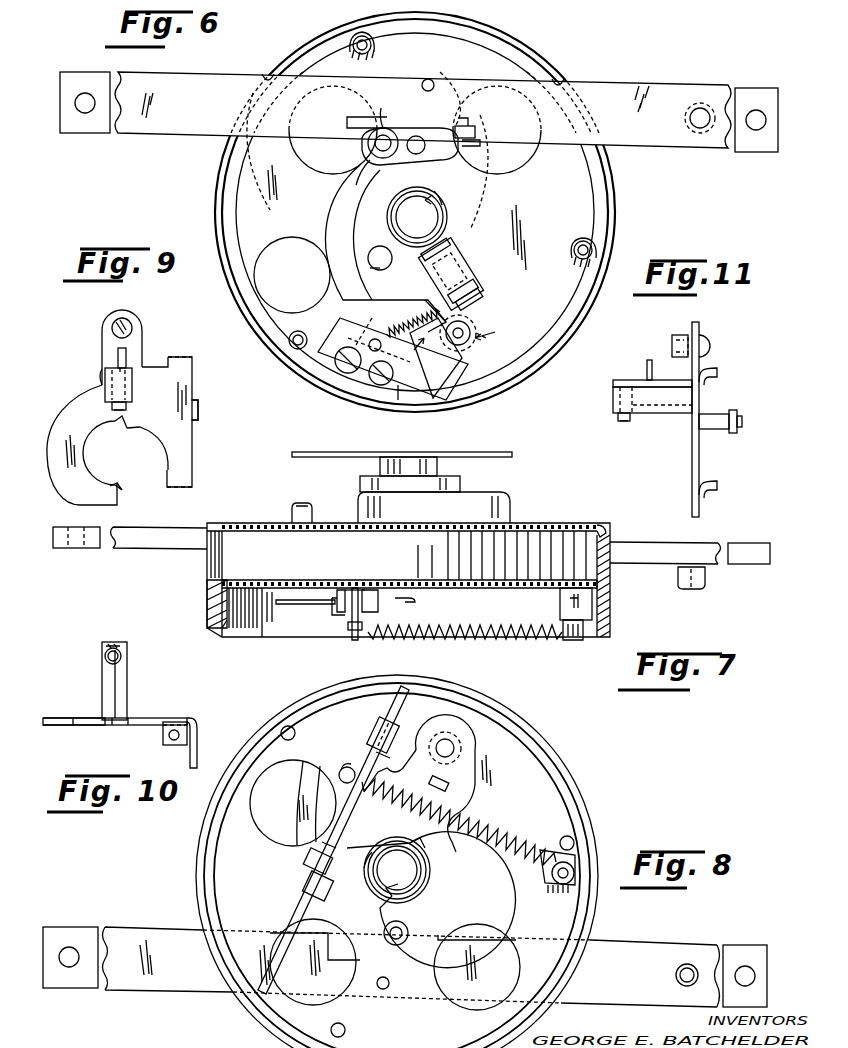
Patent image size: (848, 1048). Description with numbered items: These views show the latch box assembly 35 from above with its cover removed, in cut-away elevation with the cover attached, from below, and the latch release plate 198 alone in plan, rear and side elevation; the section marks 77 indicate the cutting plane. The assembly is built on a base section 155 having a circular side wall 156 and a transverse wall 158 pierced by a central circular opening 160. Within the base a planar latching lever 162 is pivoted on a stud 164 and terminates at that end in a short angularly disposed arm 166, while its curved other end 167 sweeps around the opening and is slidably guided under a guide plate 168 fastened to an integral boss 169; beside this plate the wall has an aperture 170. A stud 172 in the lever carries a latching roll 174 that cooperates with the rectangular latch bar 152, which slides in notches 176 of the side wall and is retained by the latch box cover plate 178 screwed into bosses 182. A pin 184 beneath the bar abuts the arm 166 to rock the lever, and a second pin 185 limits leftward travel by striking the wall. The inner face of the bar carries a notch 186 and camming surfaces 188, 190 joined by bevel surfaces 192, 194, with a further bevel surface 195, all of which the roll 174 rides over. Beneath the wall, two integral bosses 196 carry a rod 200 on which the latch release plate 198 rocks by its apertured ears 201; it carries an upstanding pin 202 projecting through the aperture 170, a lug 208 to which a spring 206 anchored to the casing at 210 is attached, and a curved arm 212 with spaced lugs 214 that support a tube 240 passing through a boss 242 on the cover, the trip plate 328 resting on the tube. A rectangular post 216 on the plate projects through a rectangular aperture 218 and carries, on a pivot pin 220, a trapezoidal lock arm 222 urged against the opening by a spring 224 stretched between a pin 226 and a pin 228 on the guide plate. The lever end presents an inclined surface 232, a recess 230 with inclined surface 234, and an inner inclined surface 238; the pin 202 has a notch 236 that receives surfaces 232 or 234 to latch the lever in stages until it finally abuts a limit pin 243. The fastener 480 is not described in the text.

In FIG. 6, the latch box assembly 35 is at (620, 196).
In FIG. 7, the latch box assembly 35 is at (265, 512).
In FIG. 8, the latch box assembly 35 is at (547, 732).
In FIG. 6, the section line 77 is at (456, 344).
In FIG. 6, the latch bar 152 is at (618, 82).
In FIG. 7, the latch bar 152 is at (620, 539).
In FIG. 8, the latch bar 152 is at (160, 931).
In FIG. 7, the base section 155 is at (206, 587).
In FIG. 6, the circular side wall 156 is at (238, 218).
In FIG. 7, the circular side wall 156 is at (232, 631).
In FIG. 6, the transverse wall 158 is at (510, 193).
In FIG. 7, the transverse wall 158 is at (250, 612).
In FIG. 8, the transverse wall 158 is at (566, 786).
In FIG. 6, the central circular opening 160 is at (442, 203).
In FIG. 8, the central circular opening 160 is at (364, 872).
In FIG. 6, the latching lever 162 is at (313, 211).
In FIG. 8, the latching lever 162 is at (290, 799).
In FIG. 6, the stud 164 is at (424, 146).
In FIG. 8, the stud 164 is at (396, 939).
In FIG. 6, the short angularly disposed arm 166 is at (456, 81).
In FIG. 6, the end of lever 167 is at (292, 275).
In FIG. 6, the guide plate 168 is at (398, 400).
In FIG. 6, the integral boss 169 is at (336, 380).
In FIG. 6, the aperture 170 is at (474, 328).
In FIG. 8, the aperture 170 is at (442, 739).
In FIG. 6, the stud 172 is at (378, 129).
In FIG. 6, the latching roll 174 is at (364, 153).
In FIG. 6, the notches 176 is at (265, 72).
In FIG. 7, the latch box cover plate 178 is at (600, 523).
In FIG. 6, the bosses 182 is at (372, 44).
In FIG. 8, the bosses 182 is at (427, 881).
In FIG. 6, the pin 184 is at (426, 79).
In FIG. 8, the pin 184 is at (383, 989).
In FIG. 6, the second pin 185 is at (702, 103).
In FIG. 7, the second pin 185 is at (706, 576).
In FIG. 8, the second pin 185 is at (688, 964).
In FIG. 6, the notch 186 is at (344, 128).
In FIG. 6, the camming surface 188 is at (392, 125).
In FIG. 6, the camming surface 190 is at (472, 130).
In FIG. 6, the bevel surface 192 is at (384, 104).
In FIG. 6, the bevel surface 194 is at (472, 112).
In FIG. 6, the bevel surface 195 is at (478, 144).
In FIG. 7, the integral bosses 196 is at (328, 612).
In FIG. 8, the integral bosses 196 is at (380, 721).
In FIG. 9, the latch release plate 198 is at (190, 384).
In FIG. 11, the latch release plate 198 is at (692, 456).
In FIG. 7, the latch release plate 198 is at (478, 604).
In FIG. 10, the latch release plate 198 is at (140, 717).
In FIG. 8, the latch release plate 198 is at (462, 875).
In FIG. 7, the rod 200 is at (286, 617).
In FIG. 8, the rod 200 is at (302, 900).
In FIG. 9, the apertured ears 201 is at (185, 355).
In FIG. 11, the apertured ears 201 is at (712, 367).
In FIG. 7, the apertured ears 201 is at (348, 622).
In FIG. 10, the apertured ears 201 is at (162, 740).
In FIG. 8, the apertured ears 201 is at (372, 732).
In FIG. 6, the upstanding pin 202 is at (491, 344).
In FIG. 9, the upstanding pin 202 is at (124, 319).
In FIG. 11, the upstanding pin 202 is at (692, 334).
In FIG. 8, the upstanding pin 202 is at (448, 739).
In FIG. 7, the spring 206 is at (480, 640).
In FIG. 8, the spring 206 is at (480, 826).
In FIG. 9, the lug 208 is at (199, 407).
In FIG. 11, the lug 208 is at (742, 414).
In FIG. 7, the lug 208 is at (354, 642).
In FIG. 10, the lug 208 is at (198, 734).
In FIG. 8, the lug 208 is at (344, 768).
In FIG. 7, the anchor 210 is at (568, 640).
In FIG. 8, the anchor 210 is at (560, 862).
In FIG. 9, the curved arm 212 is at (68, 470).
In FIG. 10, the curved arm 212 is at (56, 717).
In FIG. 8, the curved arm 212 is at (454, 888).
In FIG. 6, the spaced lugs 214 is at (422, 217).
In FIG. 9, the spaced lugs 214 is at (112, 470).
In FIG. 8, the spaced lugs 214 is at (390, 888).
In FIG. 6, the rectangular post 216 is at (450, 244).
In FIG. 9, the rectangular post 216 is at (102, 382).
In FIG. 11, the rectangular post 216 is at (646, 417).
In FIG. 10, the rectangular post 216 is at (102, 652).
In FIG. 6, the rectangular aperture 218 is at (392, 255).
In FIG. 6, the pivot pin 220 is at (438, 249).
In FIG. 9, the pivot pin 220 is at (110, 406).
In FIG. 11, the pivot pin 220 is at (624, 421).
In FIG. 10, the pivot pin 220 is at (118, 646).
In FIG. 6, the lock arm 222 is at (462, 281).
In FIG. 9, the lock arm 222 is at (105, 368).
In FIG. 11, the lock arm 222 is at (636, 380).
In FIG. 6, the spring 224 is at (408, 332).
In FIG. 6, the pin 226 is at (468, 290).
In FIG. 9, the pin 226 is at (130, 359).
In FIG. 11, the pin 226 is at (650, 360).
In FIG. 6, the pin 228 is at (368, 346).
In FIG. 6, the recess 230 is at (458, 346).
In FIG. 6, the inclined surface 232 is at (470, 304).
In FIG. 6, the inclined surface 234 is at (428, 356).
In FIG. 9, the notch 236 is at (106, 324).
In FIG. 11, the notch 236 is at (672, 336).
In FIG. 6, the inclined surface 238 is at (426, 300).
In FIG. 6, the tube 240 is at (390, 200).
In FIG. 7, the tube 240 is at (434, 456).
In FIG. 8, the tube 240 is at (382, 841).
In FIG. 7, the boss 242 is at (358, 474).
In FIG. 6, the limit pin 243 is at (372, 278).
In FIG. 7, the trip plate 328 is at (308, 454).
In FIG. 7, the screw 480 is at (304, 507).